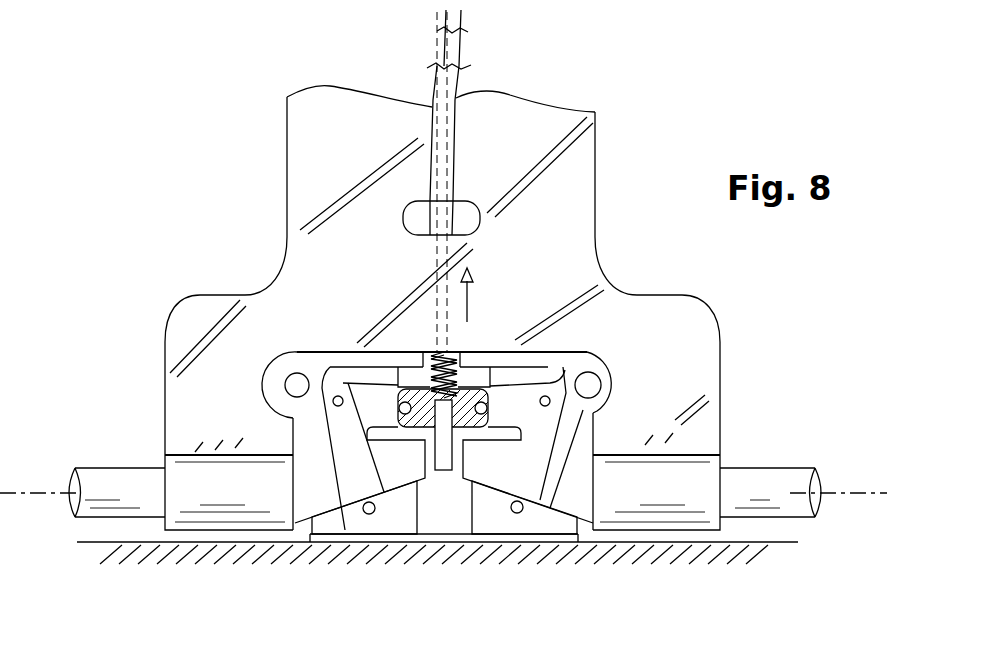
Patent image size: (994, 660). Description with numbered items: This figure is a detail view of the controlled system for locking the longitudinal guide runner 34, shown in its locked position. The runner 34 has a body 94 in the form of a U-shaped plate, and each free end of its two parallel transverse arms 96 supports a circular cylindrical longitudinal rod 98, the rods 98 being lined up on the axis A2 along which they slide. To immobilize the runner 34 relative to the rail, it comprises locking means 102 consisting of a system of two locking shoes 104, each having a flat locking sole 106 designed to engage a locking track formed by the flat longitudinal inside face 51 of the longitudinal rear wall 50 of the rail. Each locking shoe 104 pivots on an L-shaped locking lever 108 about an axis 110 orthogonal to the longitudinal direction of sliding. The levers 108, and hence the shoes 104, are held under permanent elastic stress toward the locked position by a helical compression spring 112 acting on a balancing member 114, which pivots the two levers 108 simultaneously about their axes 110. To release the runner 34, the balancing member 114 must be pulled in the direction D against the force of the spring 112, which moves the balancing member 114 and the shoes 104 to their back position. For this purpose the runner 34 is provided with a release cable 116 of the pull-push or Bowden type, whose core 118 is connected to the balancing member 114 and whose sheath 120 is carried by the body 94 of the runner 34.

The guide runner 34 is at (628, 193).
The body 94 is at (730, 340).
The transverse arms 96 is at (192, 403).
The longitudinal rod 98 is at (95, 484).
The axis A2 is at (873, 493).
The release cable 116 is at (408, 76).
The core 118 is at (461, 50).
The sheath 120 is at (456, 86).
The direction D is at (477, 298).
The locking lever 108 is at (535, 450).
The axis 110 is at (338, 396).
The helical compression spring 112 is at (433, 354).
The balancing member 114 is at (457, 390).
The locking means 102 is at (575, 485).
The locking shoe 104 is at (388, 513).
The locking sole 106 is at (522, 541).
The inside face 51 is at (115, 537).
The rear wall 50 is at (290, 549).